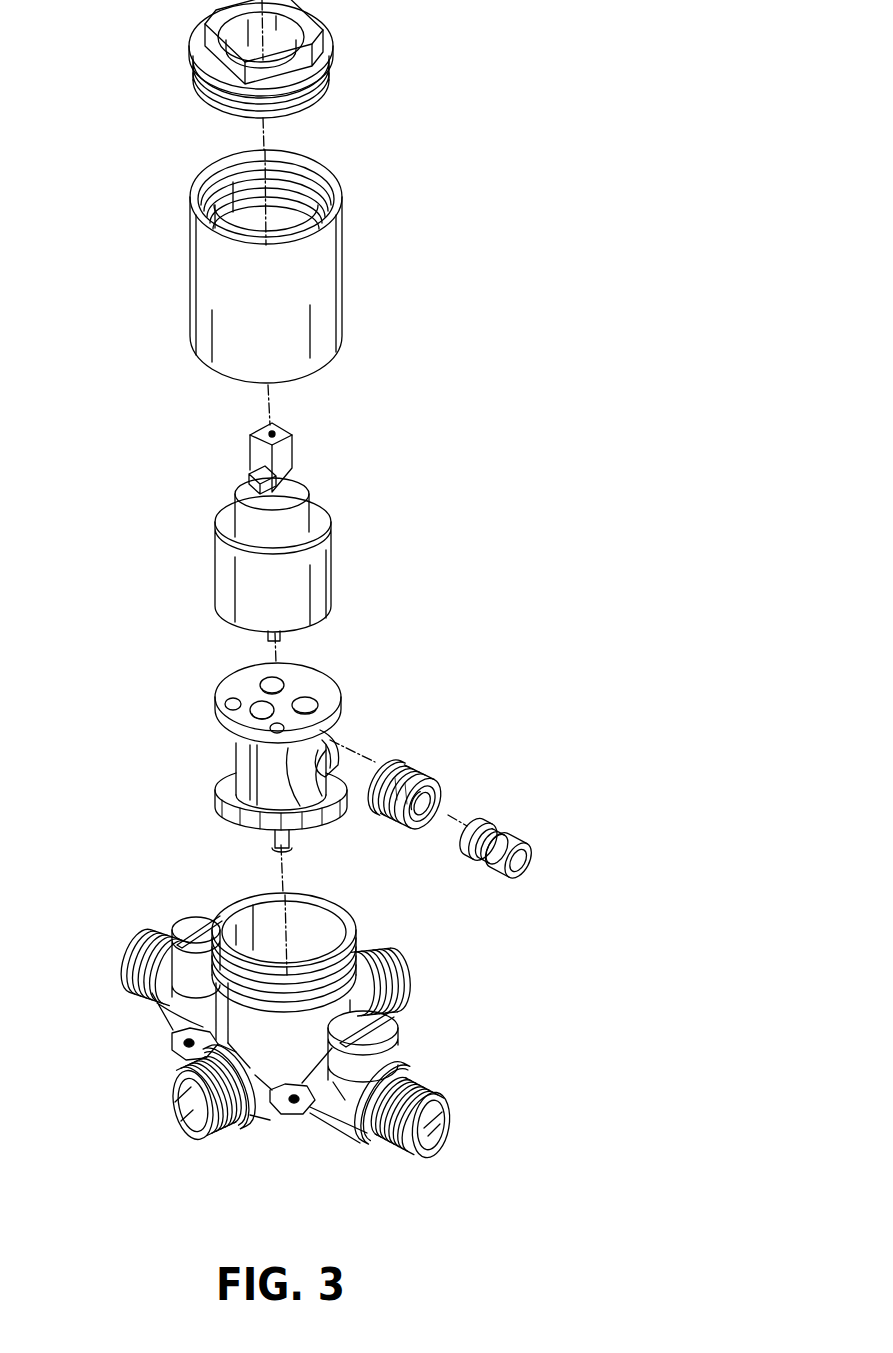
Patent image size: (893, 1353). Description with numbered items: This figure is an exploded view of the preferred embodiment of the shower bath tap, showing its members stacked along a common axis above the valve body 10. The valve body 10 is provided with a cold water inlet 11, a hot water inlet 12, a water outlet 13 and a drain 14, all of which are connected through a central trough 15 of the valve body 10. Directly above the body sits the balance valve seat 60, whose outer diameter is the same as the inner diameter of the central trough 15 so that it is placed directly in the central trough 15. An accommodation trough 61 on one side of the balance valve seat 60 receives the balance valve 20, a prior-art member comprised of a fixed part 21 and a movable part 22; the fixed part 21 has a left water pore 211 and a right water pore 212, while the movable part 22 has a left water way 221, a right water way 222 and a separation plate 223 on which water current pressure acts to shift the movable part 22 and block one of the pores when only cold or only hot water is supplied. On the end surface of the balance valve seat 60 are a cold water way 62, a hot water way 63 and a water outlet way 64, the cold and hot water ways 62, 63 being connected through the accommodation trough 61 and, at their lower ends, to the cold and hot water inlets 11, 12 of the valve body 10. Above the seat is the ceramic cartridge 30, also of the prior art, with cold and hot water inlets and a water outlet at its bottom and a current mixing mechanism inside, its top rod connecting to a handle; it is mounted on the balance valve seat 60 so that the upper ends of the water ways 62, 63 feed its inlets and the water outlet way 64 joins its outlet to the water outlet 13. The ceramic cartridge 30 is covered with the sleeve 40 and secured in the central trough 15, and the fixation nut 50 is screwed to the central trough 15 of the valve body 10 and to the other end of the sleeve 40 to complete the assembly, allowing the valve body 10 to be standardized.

The valve body 10 is at (289, 1027).
The cold water inlet 11 is at (130, 950).
The hot water inlet 12 is at (450, 1125).
The water outlet 13 is at (408, 978).
The drain 14 is at (187, 1118).
The central trough 15 is at (263, 920).
The balance valve 20 is at (465, 833).
The fixed part 21 is at (417, 803).
The left water pore 211 is at (380, 810).
The right water pore 212 is at (404, 815).
The movable part 22 is at (501, 872).
The left water way 221 is at (470, 850).
The right water way 222 is at (506, 870).
The separation plate 223 is at (492, 858).
The ceramic cartridge 30 is at (323, 515).
The sleeve 40 is at (333, 255).
The fixation nut 50 is at (327, 55).
The balance valve seat 60 is at (263, 733).
The accommodation trough 61 is at (333, 738).
The cold water way 62 is at (279, 681).
The hot water way 63 is at (317, 702).
The water outlet way 64 is at (262, 710).